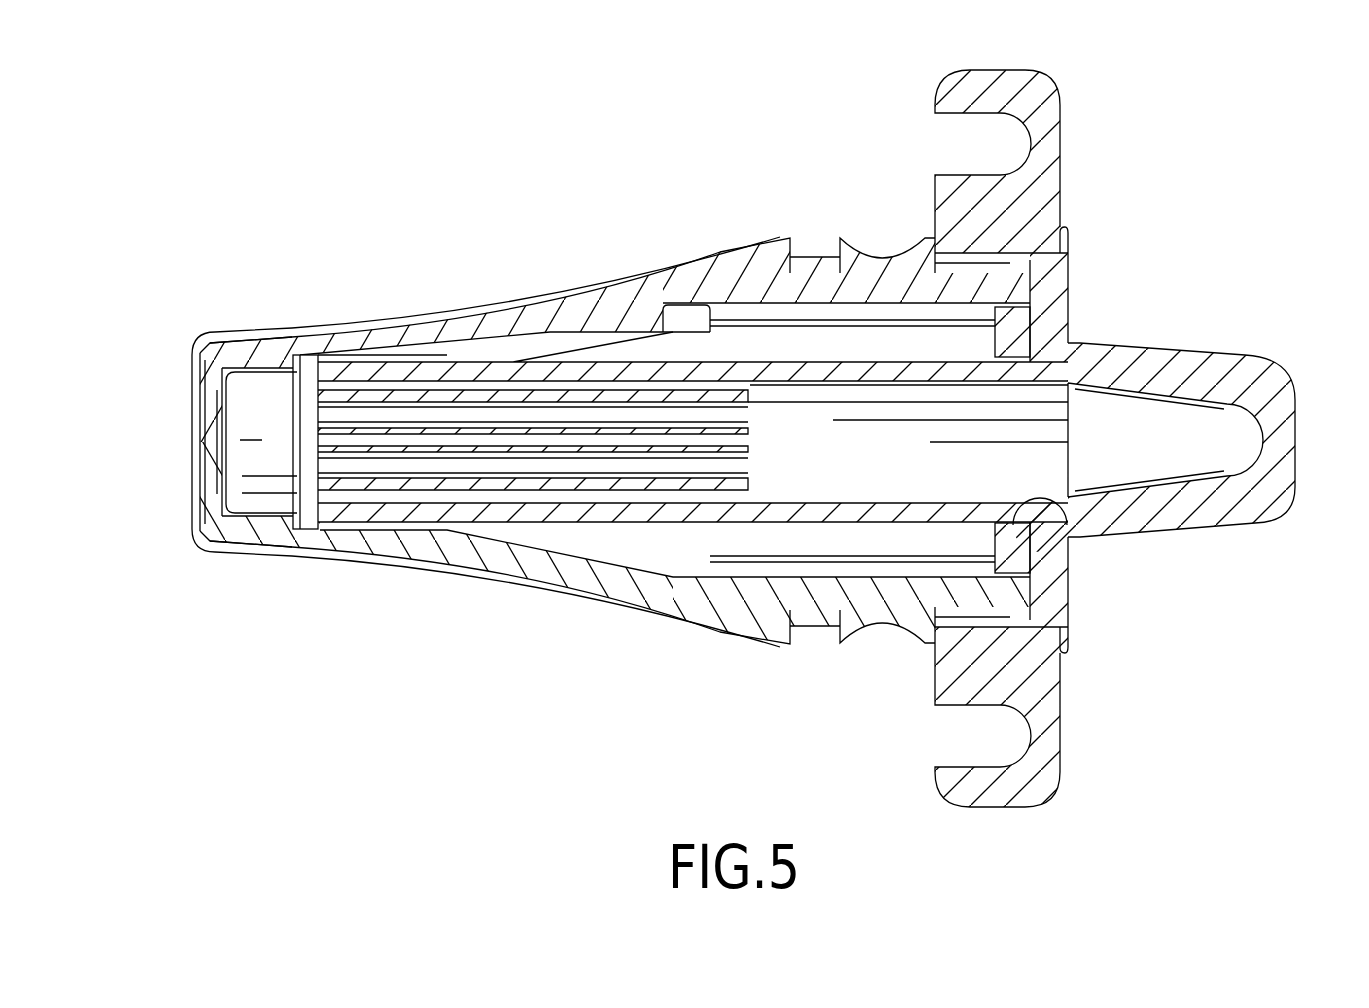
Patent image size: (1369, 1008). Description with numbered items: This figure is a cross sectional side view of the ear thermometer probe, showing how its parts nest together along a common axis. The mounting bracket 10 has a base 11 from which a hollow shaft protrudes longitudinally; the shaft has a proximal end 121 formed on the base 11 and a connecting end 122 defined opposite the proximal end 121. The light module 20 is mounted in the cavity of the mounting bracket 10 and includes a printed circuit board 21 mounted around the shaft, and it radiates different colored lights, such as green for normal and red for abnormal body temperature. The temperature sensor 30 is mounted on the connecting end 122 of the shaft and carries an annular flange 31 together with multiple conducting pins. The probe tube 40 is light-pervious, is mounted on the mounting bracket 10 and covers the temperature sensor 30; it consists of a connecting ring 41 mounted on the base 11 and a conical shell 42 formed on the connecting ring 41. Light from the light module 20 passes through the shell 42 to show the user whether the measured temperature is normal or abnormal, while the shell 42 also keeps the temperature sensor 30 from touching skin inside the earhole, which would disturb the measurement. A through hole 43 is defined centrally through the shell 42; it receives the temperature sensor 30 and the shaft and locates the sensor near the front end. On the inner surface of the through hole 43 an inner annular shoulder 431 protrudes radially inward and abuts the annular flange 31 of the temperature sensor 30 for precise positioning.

The mounting bracket 10 is at (1100, 123).
The base 11 is at (953, 195).
The light module 20 is at (1036, 335).
The printed circuit board 21 is at (1040, 573).
The temperature sensor 30 is at (261, 530).
The annular flange 31 is at (303, 358).
The probe tube 40 is at (563, 246).
The connecting ring 41 is at (1066, 236).
The shell 42 is at (405, 292).
The through hole 43 is at (200, 402).
The inner annular shoulder 431 is at (237, 348).
The proximal end 121 is at (1036, 492).
The connecting end 122 is at (355, 518).